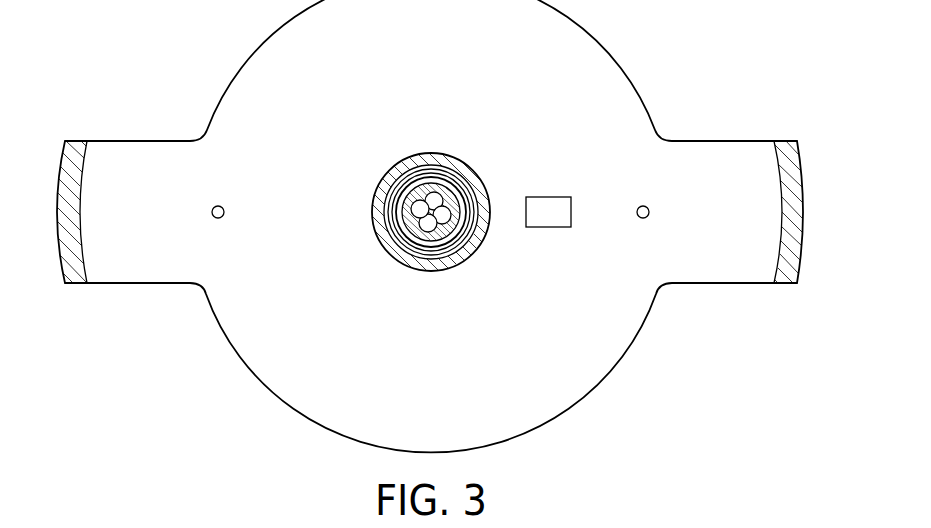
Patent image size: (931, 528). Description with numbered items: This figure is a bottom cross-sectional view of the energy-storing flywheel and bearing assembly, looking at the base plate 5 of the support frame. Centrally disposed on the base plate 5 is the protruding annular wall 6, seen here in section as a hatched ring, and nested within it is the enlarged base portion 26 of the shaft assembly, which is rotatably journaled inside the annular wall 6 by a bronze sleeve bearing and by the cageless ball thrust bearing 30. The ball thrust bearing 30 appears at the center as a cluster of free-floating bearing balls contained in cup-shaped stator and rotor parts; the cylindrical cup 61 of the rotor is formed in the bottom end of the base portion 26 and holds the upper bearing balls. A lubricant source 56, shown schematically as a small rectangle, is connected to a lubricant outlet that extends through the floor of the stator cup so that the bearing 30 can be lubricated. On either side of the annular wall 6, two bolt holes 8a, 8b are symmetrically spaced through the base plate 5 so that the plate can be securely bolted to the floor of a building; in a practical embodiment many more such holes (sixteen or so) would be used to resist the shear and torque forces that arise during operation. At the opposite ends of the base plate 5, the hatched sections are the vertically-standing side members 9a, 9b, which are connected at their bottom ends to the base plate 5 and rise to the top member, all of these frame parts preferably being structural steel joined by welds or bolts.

The base plate 5 is at (306, 147).
The annular wall 6 is at (474, 180).
The bolt hole 8a is at (212, 206).
The bolt hole 8b is at (649, 207).
The side member 9a is at (72, 272).
The side member 9b is at (783, 272).
The base portion 26 is at (450, 233).
The ball thrust bearing 30 is at (393, 238).
The lubricant source 56 is at (551, 207).
The cylindrical cup 61 is at (400, 184).